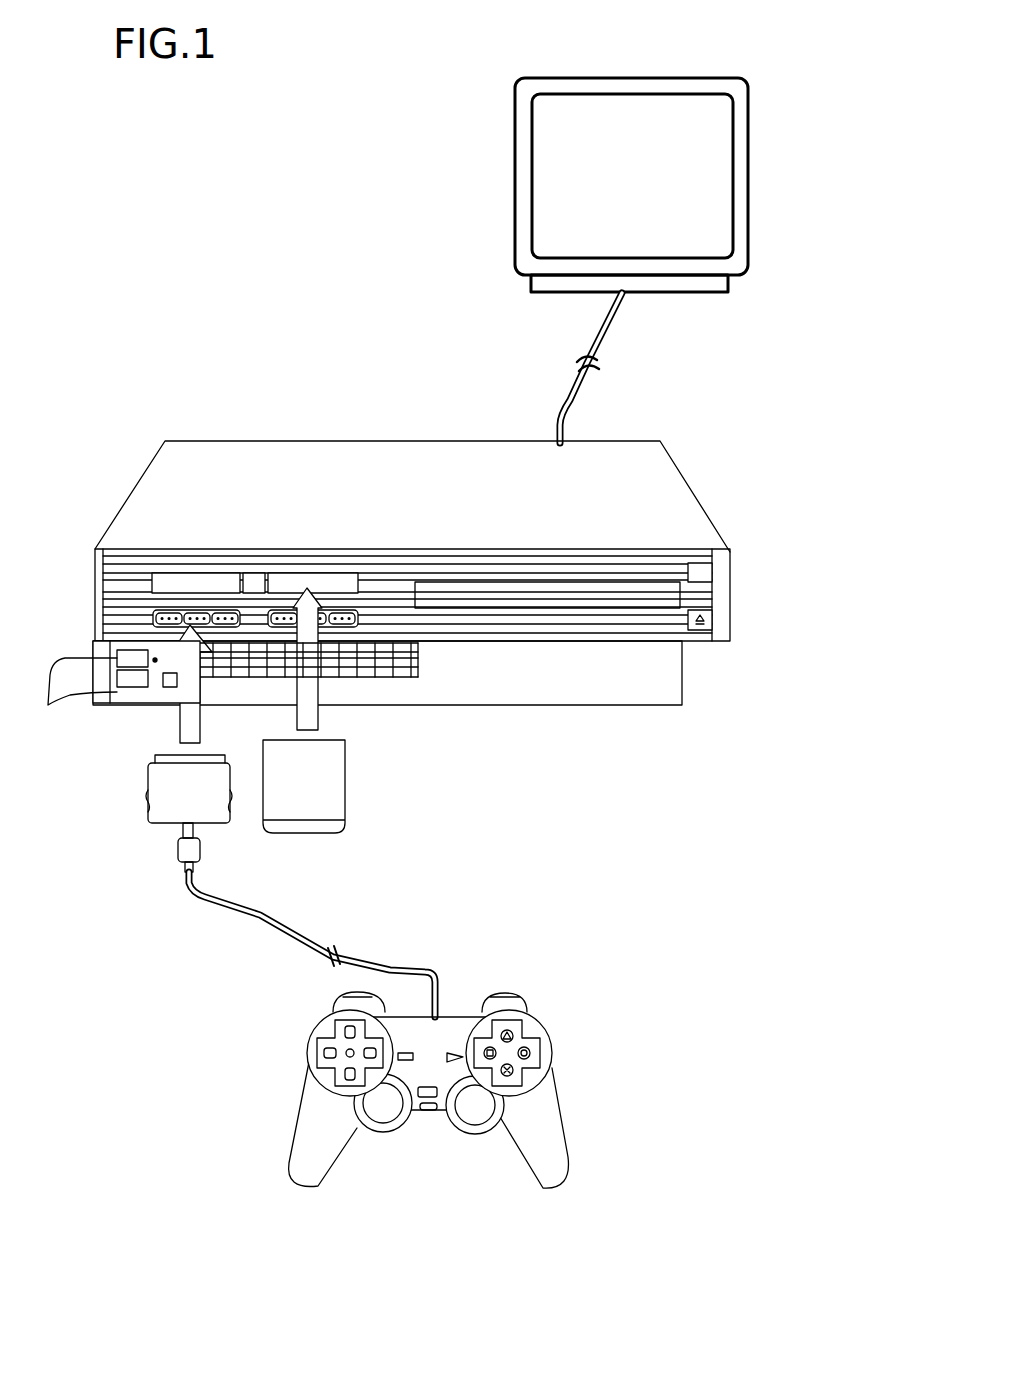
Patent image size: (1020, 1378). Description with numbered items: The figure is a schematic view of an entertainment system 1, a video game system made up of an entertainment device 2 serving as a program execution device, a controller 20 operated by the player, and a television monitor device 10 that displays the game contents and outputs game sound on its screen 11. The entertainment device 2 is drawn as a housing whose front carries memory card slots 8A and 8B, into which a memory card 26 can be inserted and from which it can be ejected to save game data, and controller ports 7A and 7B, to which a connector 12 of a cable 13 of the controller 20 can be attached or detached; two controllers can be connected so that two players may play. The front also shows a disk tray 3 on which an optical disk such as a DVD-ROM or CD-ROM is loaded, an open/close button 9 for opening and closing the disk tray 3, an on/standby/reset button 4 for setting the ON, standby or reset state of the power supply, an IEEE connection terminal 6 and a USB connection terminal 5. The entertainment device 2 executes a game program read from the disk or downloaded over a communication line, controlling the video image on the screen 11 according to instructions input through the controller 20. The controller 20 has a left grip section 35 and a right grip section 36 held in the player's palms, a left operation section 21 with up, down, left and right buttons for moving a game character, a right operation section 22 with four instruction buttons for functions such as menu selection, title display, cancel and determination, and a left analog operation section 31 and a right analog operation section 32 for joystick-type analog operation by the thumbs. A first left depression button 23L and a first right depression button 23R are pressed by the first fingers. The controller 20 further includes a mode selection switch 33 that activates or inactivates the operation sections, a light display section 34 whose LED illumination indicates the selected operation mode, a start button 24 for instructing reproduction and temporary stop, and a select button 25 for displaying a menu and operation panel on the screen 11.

The entertainment system 1 is at (561, 824).
The entertainment device 2 is at (666, 467).
The disk tray 3 is at (542, 600).
The on/standby/reset button 4 is at (695, 563).
The USB connection terminal 5 is at (76, 702).
The IEEE 1394 connection terminal 6 is at (168, 682).
The controller port 7A is at (148, 625).
The controller port 7B is at (357, 627).
The memory card slot 8A is at (185, 572).
The memory card slot 8B is at (298, 572).
The open/close button 9 is at (703, 630).
The television monitor device 10 is at (747, 95).
The screen 11 is at (678, 110).
The connector 12 is at (157, 802).
The cable 13 is at (272, 912).
The controller 20 is at (566, 1076).
The left operation section 21 is at (311, 1028).
The right operation section 22 is at (535, 1026).
The first left depression button 23L is at (345, 988).
The first right depression button 23R is at (505, 995).
The start button 24 is at (457, 1057).
The select button 25 is at (405, 1050).
The memory card 26 is at (352, 779).
The left analog operation section 31 is at (370, 1130).
The right analog operation section 32 is at (472, 1117).
The mode selection switch 33 is at (415, 1118).
The light display section 34 is at (432, 1113).
The left grip section 35 is at (300, 1122).
The right grip section 36 is at (553, 1163).